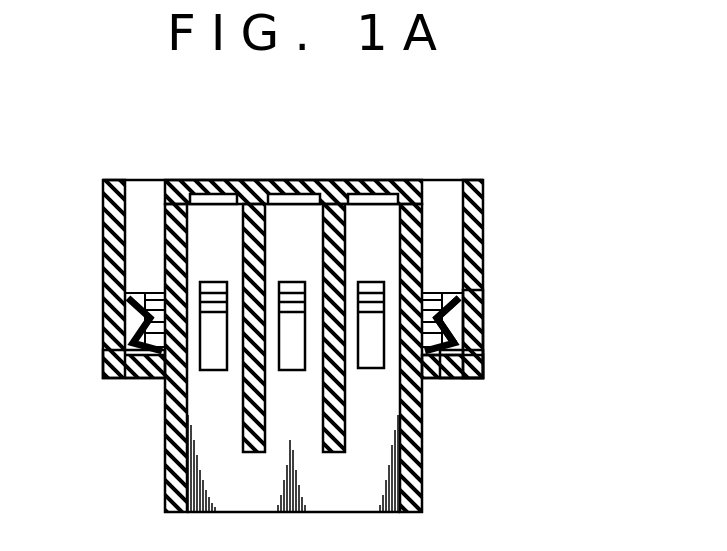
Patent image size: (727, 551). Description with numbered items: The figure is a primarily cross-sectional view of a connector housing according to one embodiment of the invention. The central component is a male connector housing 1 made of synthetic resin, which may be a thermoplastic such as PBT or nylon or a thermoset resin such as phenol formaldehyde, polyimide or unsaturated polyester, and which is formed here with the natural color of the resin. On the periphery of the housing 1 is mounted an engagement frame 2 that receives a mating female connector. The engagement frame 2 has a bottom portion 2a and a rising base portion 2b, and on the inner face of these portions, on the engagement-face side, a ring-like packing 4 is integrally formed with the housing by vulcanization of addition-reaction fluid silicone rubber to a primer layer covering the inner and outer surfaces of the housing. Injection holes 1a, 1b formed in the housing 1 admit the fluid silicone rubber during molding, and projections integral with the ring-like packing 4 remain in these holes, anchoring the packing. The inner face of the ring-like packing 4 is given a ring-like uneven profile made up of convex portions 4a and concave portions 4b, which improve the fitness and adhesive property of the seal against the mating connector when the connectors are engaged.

The male connector housing 1 is at (278, 180).
The injection hole 1a is at (105, 350).
The injection hole 1b is at (483, 350).
The engagement frame 2 is at (483, 203).
The bottom portion 2a is at (453, 378).
The rising base portion 2b is at (483, 327).
The ring-like packing 4 is at (130, 330).
The convex portion 4a is at (433, 297).
The concave portion 4b is at (440, 313).